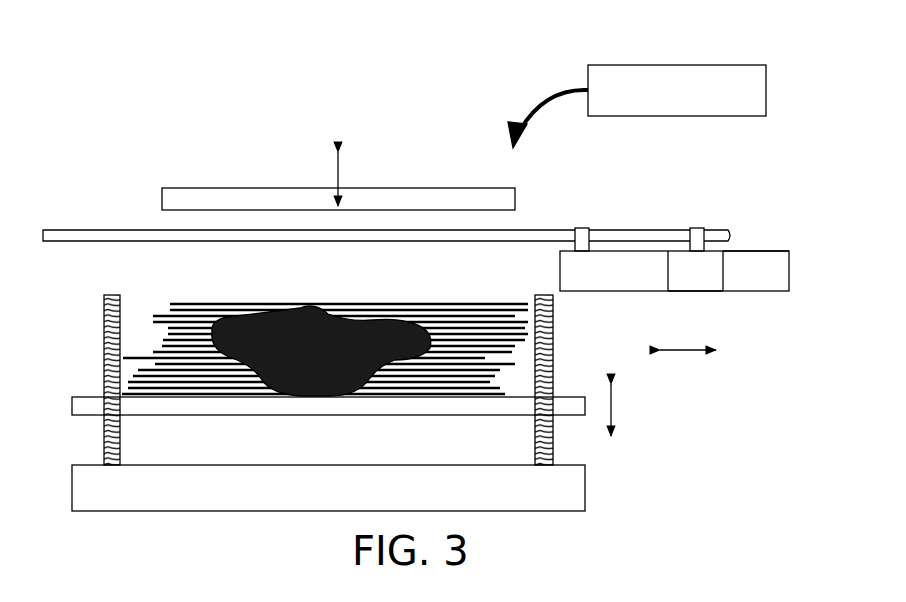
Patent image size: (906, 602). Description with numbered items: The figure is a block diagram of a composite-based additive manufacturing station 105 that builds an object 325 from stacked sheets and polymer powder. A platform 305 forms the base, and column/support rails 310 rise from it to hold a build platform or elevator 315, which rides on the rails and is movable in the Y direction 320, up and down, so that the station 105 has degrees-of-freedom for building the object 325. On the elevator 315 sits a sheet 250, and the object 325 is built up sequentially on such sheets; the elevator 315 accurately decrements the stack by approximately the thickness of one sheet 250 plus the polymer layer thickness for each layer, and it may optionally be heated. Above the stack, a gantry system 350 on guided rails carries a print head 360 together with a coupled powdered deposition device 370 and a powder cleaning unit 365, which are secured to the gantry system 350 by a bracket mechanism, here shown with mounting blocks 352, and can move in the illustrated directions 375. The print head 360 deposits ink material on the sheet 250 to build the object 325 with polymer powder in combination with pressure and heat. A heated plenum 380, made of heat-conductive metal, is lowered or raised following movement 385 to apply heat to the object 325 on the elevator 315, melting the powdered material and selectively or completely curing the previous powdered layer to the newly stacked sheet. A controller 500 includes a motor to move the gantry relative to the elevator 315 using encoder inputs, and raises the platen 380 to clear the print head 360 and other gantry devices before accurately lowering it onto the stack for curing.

The composite-based additive manufacturing station 105 is at (340, 78).
The sheet 250 is at (197, 318).
The platform 305 is at (585, 487).
The column/support rails 310 is at (103, 353).
The build platform or elevator 315 is at (410, 416).
The Y direction 320 is at (620, 406).
The object 325 is at (312, 312).
The gantry system 350 is at (126, 224).
The mounting blocks 352 is at (697, 228).
The print head 360 is at (556, 260).
The powder cleaning unit 365 is at (754, 246).
The powdered deposition device 370 is at (701, 295).
The illustrated directions 375 is at (686, 353).
The heated plenum 380 is at (452, 183).
The movement 385 is at (346, 165).
The controller 500 is at (676, 64).